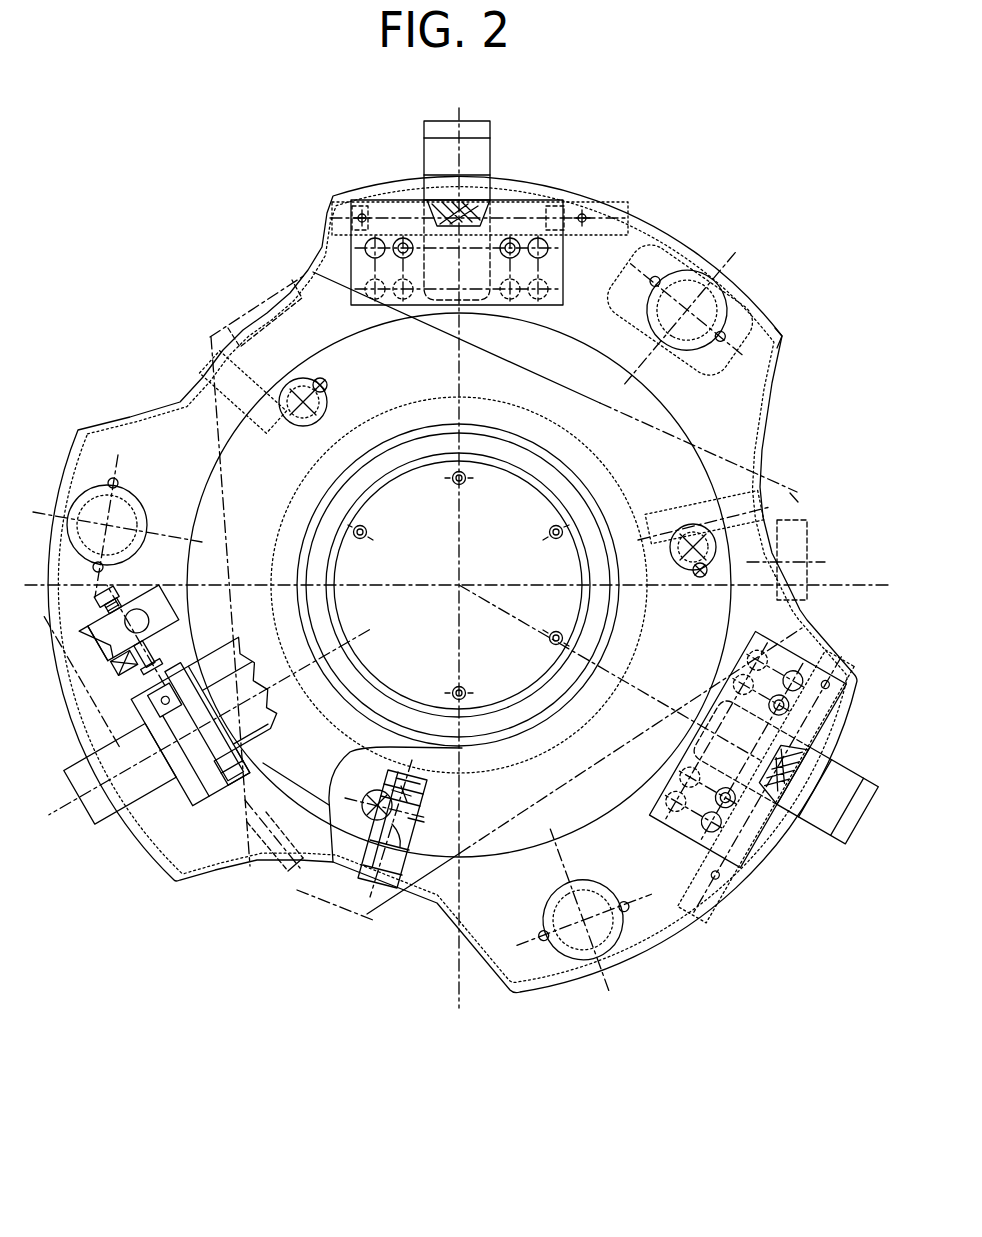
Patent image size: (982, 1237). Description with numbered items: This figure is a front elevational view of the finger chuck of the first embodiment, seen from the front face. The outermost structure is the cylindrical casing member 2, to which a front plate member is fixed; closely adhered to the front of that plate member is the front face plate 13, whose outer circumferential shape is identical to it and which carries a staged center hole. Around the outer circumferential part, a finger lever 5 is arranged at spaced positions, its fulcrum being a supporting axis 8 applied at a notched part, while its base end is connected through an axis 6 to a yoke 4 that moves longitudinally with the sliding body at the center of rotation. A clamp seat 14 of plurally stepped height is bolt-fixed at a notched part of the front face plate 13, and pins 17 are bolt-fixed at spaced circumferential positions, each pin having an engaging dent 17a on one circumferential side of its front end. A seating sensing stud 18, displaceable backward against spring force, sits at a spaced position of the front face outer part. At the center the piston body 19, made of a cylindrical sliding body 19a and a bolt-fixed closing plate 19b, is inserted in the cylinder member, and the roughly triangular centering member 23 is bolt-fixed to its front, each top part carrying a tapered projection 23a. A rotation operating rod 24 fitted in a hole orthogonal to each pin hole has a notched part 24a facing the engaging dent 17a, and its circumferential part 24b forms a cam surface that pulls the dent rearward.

The cylindrical casing member 2 is at (317, 773).
The yoke 4 is at (105, 632).
The finger lever 5 is at (482, 151).
The axis 6 is at (152, 632).
The supporting axis 8 is at (393, 200).
The front face plate 13 is at (780, 333).
The clamp seat 14 is at (563, 255).
The pins 17 is at (328, 400).
The engaging dent 17a is at (430, 913).
The seating sensing stud 18 is at (137, 507).
The piston body 19 is at (425, 430).
The cylindrical sliding body 19a is at (392, 463).
The closing plate 19b is at (493, 533).
The centering member 23 is at (790, 493).
The projection 23a is at (273, 297).
The rotation operating rod 24 is at (264, 422).
The notched part 24a is at (377, 790).
The circumferential part 24b is at (400, 818).